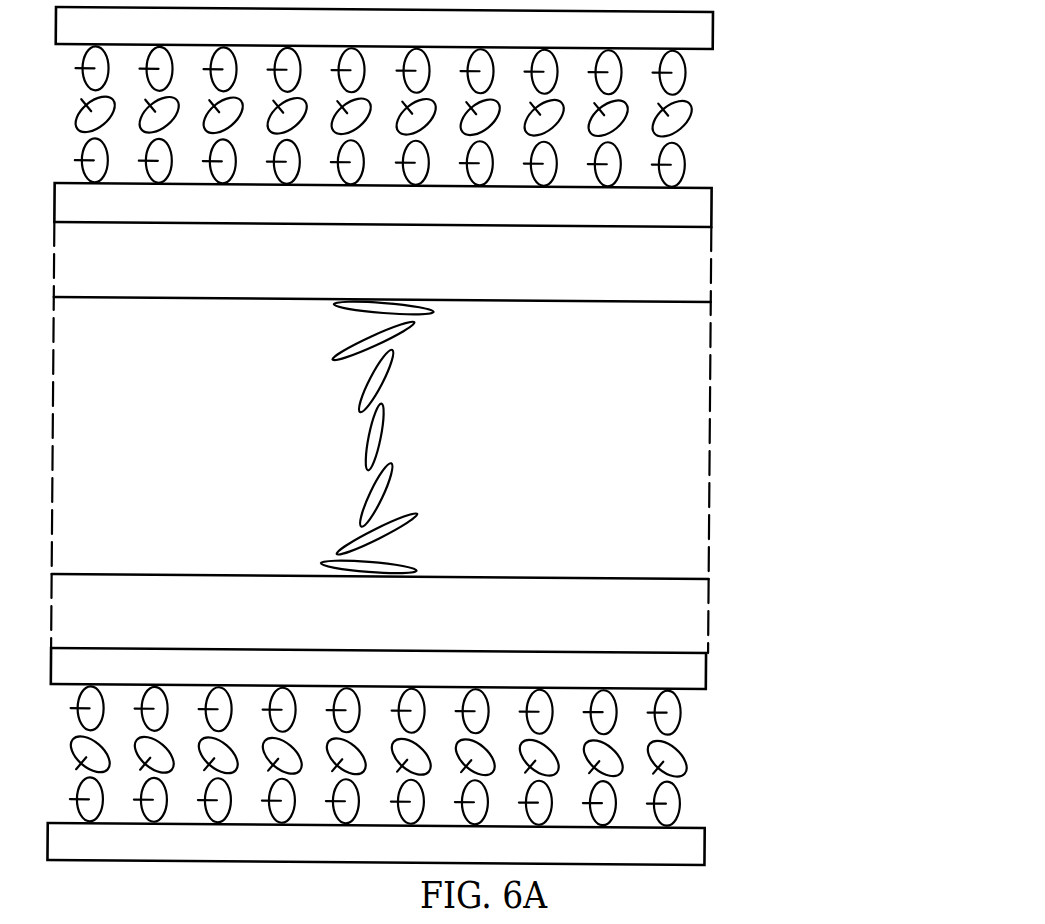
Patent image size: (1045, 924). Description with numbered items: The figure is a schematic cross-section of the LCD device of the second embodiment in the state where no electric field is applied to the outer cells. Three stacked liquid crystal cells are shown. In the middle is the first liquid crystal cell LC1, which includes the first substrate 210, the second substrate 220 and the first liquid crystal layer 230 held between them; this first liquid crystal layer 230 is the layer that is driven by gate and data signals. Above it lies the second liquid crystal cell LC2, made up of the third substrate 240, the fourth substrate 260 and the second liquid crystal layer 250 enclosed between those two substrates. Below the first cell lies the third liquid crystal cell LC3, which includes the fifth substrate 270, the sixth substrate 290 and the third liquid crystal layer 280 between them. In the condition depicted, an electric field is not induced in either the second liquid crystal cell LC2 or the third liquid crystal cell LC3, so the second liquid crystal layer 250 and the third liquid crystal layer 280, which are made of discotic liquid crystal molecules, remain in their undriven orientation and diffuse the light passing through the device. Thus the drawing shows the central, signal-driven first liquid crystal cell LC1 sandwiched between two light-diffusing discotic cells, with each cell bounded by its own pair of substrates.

The first substrate 210 is at (403, 632).
The second substrate 220 is at (406, 280).
The first liquid crystal layer 230 is at (701, 423).
The third substrate 240 is at (441, 205).
The second liquid crystal layer 250 is at (703, 113).
The fourth substrate 260 is at (702, 23).
The fifth substrate 270 is at (698, 665).
The third liquid crystal layer 280 is at (699, 752).
The sixth substrate 290 is at (435, 845).
The first liquid crystal cell LC1 is at (484, 438).
The second liquid crystal cell LC2 is at (486, 118).
The third liquid crystal cell LC3 is at (480, 758).